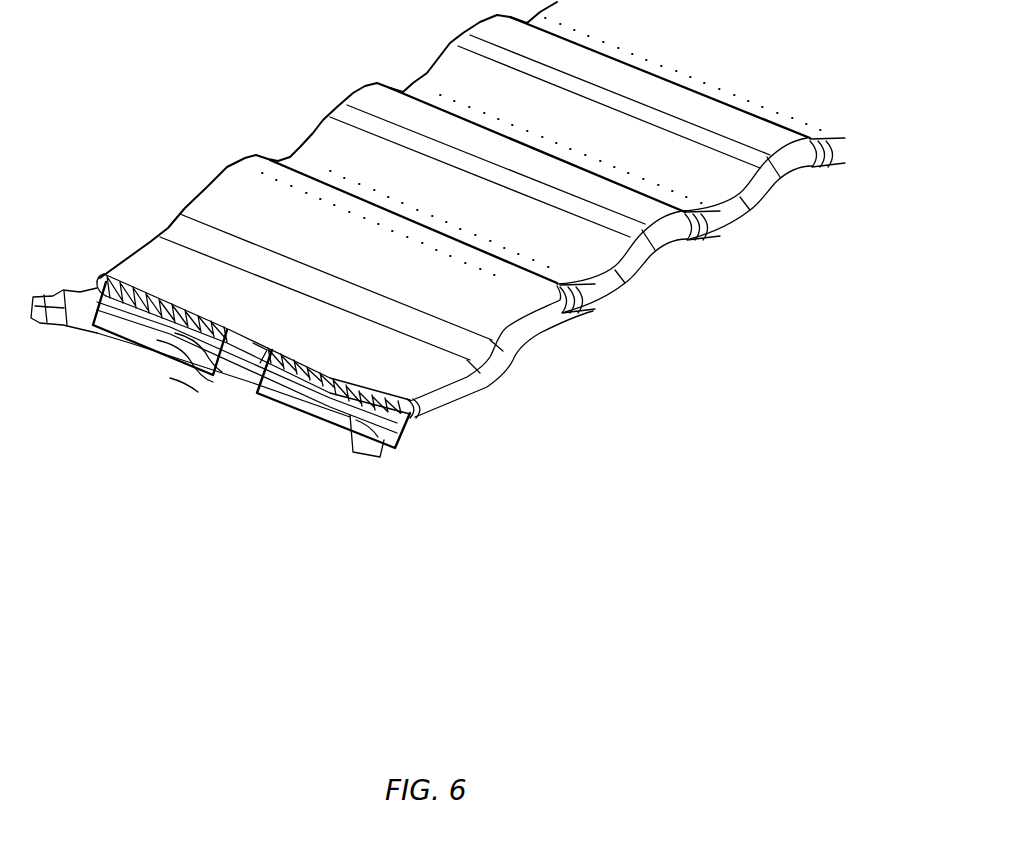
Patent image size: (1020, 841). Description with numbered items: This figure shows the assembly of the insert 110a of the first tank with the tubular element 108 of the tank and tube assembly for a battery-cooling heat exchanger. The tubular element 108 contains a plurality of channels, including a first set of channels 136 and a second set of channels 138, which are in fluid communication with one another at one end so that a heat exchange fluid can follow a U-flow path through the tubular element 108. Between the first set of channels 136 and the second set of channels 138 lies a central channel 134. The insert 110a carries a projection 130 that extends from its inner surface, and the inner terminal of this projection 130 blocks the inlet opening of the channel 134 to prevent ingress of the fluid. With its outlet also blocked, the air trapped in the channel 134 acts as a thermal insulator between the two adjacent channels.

The tubular element 108 is at (347, 98).
The projection 130 is at (257, 343).
The channel 134 is at (258, 340).
The first set of channels 136 is at (153, 347).
The second set of channels 138 is at (320, 420).
The insert 110a is at (185, 383).